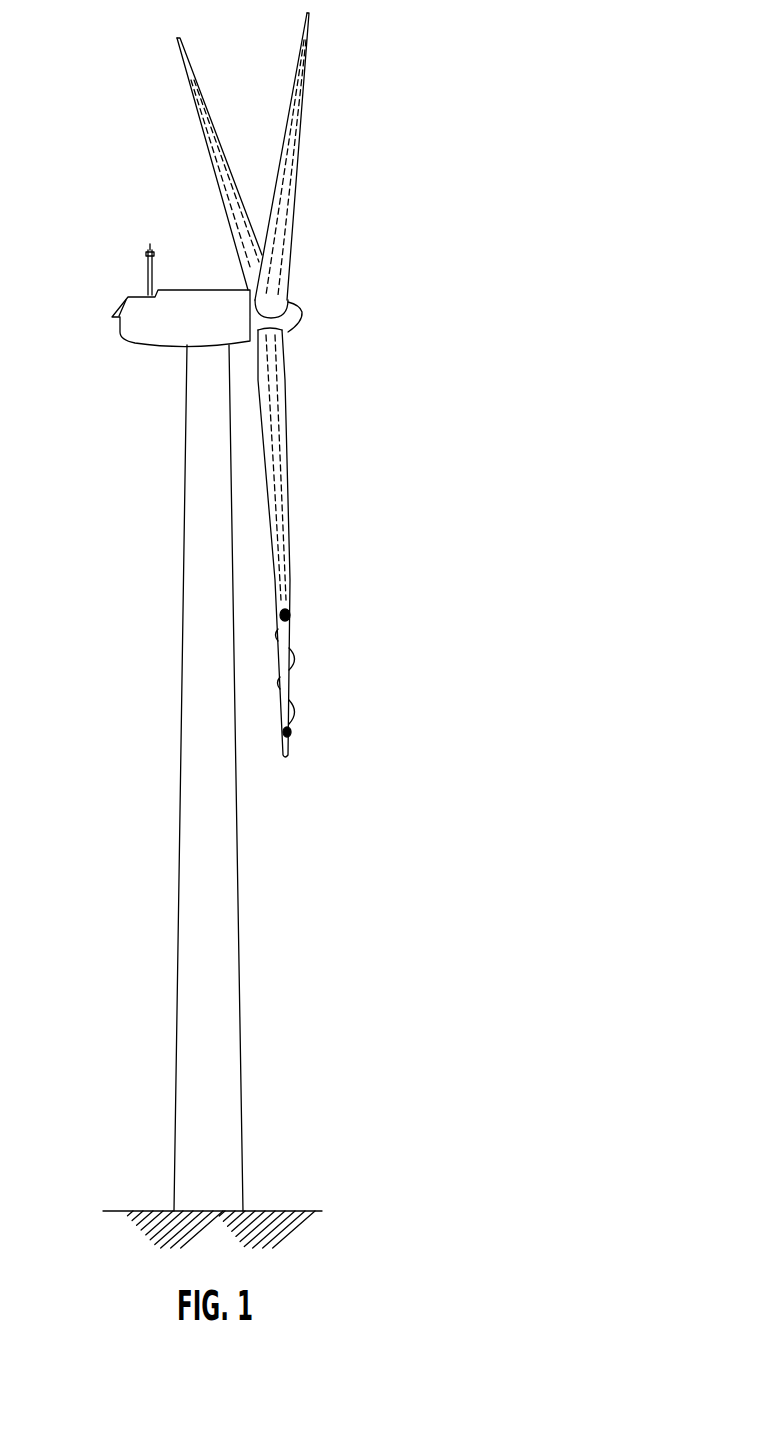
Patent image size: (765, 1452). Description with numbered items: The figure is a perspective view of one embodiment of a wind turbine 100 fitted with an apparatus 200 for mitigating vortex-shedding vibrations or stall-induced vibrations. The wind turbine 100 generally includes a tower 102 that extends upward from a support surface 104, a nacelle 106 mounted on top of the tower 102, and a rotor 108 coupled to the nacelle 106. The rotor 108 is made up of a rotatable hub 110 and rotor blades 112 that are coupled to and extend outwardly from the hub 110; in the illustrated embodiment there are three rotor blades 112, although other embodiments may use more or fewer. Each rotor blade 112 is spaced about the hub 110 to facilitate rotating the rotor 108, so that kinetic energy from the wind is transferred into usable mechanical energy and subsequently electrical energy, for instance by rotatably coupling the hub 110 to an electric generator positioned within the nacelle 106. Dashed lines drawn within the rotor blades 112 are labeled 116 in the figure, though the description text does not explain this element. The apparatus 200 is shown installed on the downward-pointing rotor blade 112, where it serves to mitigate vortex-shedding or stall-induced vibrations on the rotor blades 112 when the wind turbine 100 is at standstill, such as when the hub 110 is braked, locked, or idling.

The wind turbine 100 is at (443, 117).
The tower 102 is at (220, 850).
The support surface 104 is at (148, 1210).
The nacelle 106 is at (158, 346).
The rotor 108 is at (339, 273).
The rotatable hub 110 is at (300, 310).
The rotor blade 112 is at (280, 385).
The spar cap / internal structure of rotor blade 116 is at (220, 180).
The apparatus for mitigating vortex-shedding vibrations and/or stall-induced vibrati 200 is at (318, 625).